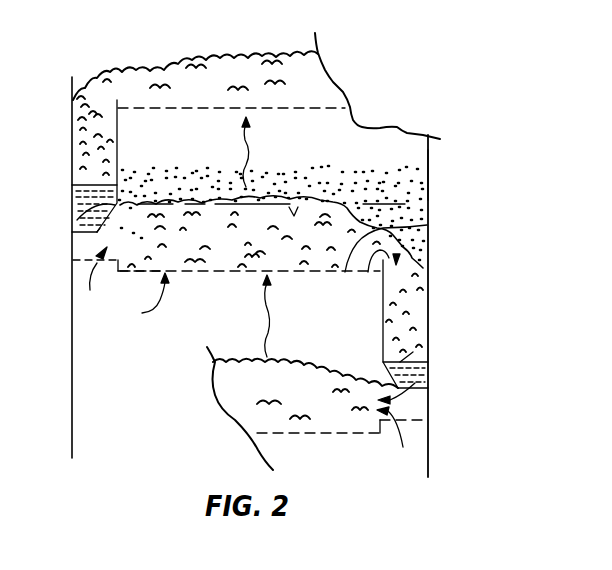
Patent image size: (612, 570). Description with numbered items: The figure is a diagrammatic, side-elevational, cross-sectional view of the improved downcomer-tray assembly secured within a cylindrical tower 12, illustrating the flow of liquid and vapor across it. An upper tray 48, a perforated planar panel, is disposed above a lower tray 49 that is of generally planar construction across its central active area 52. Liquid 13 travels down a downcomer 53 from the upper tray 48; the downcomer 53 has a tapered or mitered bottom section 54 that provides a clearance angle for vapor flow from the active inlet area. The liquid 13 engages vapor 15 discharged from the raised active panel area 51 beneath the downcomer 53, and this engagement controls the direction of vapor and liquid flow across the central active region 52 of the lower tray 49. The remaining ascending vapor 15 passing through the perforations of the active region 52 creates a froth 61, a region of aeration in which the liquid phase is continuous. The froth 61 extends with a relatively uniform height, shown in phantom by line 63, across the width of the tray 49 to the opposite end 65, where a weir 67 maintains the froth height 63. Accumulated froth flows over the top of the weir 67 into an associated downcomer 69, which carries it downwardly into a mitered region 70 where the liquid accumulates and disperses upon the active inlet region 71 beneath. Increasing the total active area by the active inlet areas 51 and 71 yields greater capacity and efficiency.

The cylindrical tower 12 is at (428, 187).
The liquid 13 is at (78, 203).
The vapor 15 is at (250, 144).
The upper tray 48 is at (320, 108).
The lower tray 49 is at (130, 273).
The raised active panel area 51 is at (87, 262).
The central active area 52 is at (143, 299).
The downcomer 53 is at (117, 120).
The mitered bottom section 54 is at (75, 228).
The froth 61 is at (283, 52).
The froth height line 63 is at (192, 200).
The opposite end 65 is at (427, 225).
The weir 67 is at (397, 260).
The downcomer 69 is at (383, 325).
The mitered region 70 is at (385, 363).
The active inlet region 71 is at (410, 412).